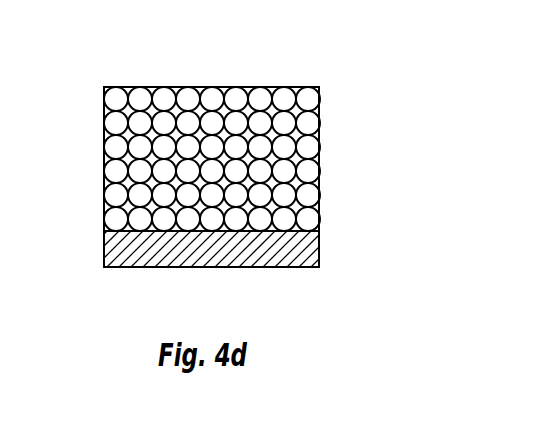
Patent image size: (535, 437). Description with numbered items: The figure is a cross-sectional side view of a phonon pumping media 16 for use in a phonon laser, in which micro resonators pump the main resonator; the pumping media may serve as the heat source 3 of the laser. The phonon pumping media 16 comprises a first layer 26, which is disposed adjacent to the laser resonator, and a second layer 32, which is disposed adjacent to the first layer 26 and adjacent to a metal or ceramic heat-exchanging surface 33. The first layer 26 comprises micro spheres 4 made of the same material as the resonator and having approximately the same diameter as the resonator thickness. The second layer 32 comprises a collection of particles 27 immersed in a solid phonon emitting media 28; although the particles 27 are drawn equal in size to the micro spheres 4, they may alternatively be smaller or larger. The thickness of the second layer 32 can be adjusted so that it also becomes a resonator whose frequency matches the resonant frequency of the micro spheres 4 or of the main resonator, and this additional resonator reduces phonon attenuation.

The heat source 3 is at (172, 87).
The micro spheres 4 is at (260, 93).
The phonon pumping media 16 is at (320, 98).
The first layer 26 is at (104, 136).
The particles 27 is at (312, 193).
The solid phonon emitting media 28 is at (122, 210).
The second layer 32 is at (104, 202).
The heat exchange surface 33 is at (287, 253).